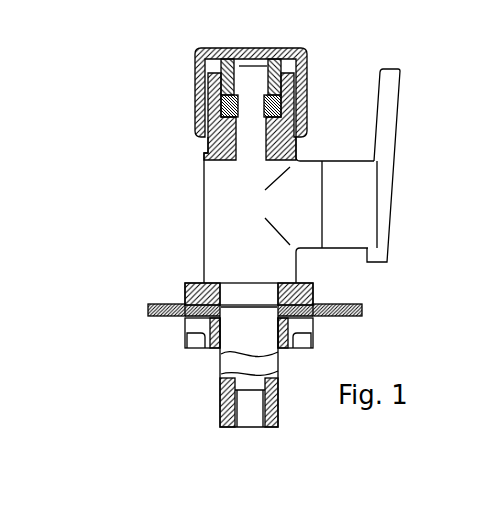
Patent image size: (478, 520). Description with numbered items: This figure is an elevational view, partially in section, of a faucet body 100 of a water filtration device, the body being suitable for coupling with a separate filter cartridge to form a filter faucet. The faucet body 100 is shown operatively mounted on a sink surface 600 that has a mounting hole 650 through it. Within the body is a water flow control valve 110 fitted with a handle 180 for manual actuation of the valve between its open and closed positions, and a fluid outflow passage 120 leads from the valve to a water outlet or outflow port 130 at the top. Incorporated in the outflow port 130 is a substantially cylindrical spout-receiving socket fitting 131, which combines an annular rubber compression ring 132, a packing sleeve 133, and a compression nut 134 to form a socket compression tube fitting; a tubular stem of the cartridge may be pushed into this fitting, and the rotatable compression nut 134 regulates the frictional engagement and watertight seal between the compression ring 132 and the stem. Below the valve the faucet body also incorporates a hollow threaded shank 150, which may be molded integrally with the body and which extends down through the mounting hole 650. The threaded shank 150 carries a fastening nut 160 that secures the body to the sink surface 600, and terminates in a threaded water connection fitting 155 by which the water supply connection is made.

The faucet body 100 is at (170, 246).
The water flow control valve 110 is at (287, 205).
The fluid outflow passage 120 is at (252, 142).
The water outlet or outflow port 130 is at (165, 130).
The spout-receiving socket fitting 131 is at (190, 91).
The annular rubber compression ring 132 is at (245, 114).
The packing sleeve 133 is at (268, 80).
The compression nut 134 is at (306, 95).
The hollow threaded shank 150 is at (233, 367).
The water connection fitting 155 is at (247, 412).
The fastening nut 160 is at (305, 340).
The handle 180 is at (388, 113).
The sink surface 600 is at (165, 310).
The mounting hole 650 is at (217, 311).